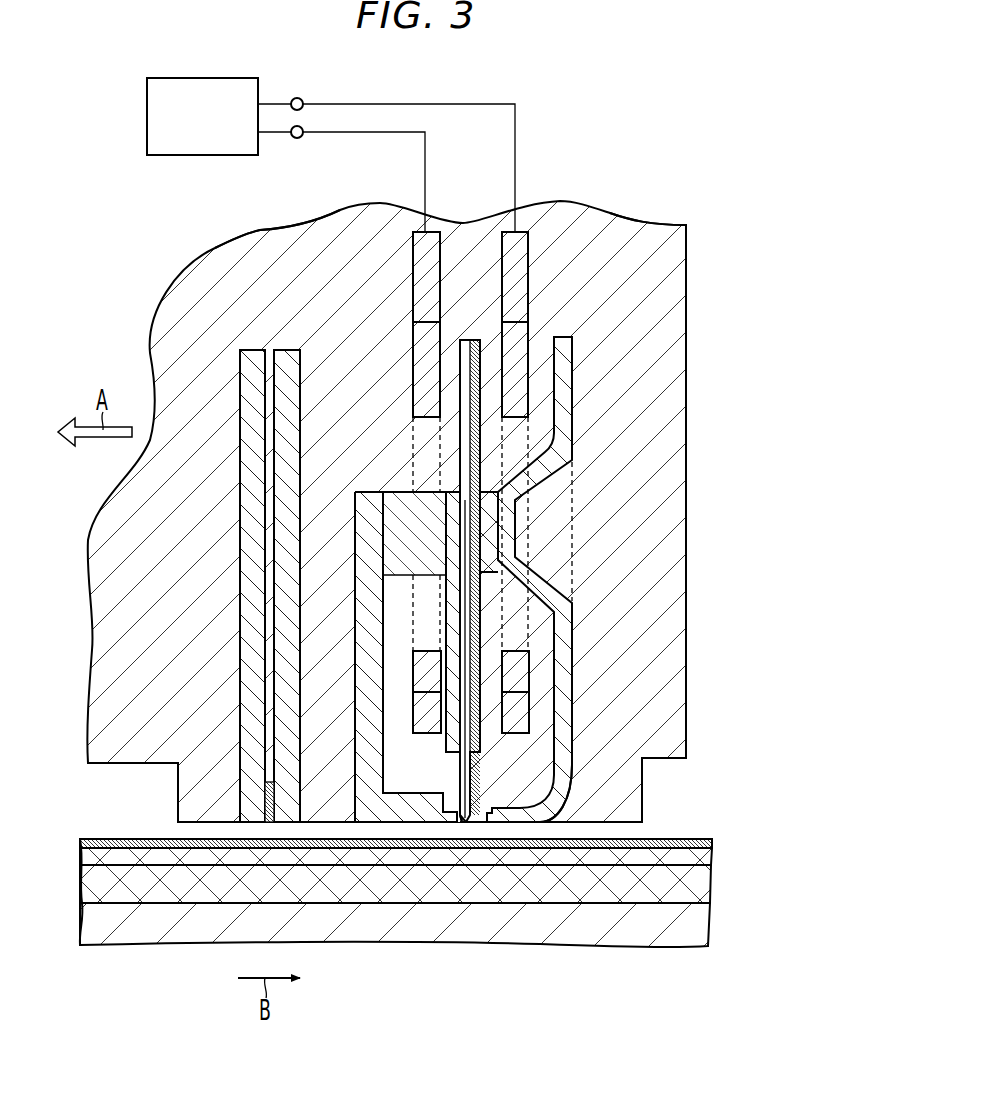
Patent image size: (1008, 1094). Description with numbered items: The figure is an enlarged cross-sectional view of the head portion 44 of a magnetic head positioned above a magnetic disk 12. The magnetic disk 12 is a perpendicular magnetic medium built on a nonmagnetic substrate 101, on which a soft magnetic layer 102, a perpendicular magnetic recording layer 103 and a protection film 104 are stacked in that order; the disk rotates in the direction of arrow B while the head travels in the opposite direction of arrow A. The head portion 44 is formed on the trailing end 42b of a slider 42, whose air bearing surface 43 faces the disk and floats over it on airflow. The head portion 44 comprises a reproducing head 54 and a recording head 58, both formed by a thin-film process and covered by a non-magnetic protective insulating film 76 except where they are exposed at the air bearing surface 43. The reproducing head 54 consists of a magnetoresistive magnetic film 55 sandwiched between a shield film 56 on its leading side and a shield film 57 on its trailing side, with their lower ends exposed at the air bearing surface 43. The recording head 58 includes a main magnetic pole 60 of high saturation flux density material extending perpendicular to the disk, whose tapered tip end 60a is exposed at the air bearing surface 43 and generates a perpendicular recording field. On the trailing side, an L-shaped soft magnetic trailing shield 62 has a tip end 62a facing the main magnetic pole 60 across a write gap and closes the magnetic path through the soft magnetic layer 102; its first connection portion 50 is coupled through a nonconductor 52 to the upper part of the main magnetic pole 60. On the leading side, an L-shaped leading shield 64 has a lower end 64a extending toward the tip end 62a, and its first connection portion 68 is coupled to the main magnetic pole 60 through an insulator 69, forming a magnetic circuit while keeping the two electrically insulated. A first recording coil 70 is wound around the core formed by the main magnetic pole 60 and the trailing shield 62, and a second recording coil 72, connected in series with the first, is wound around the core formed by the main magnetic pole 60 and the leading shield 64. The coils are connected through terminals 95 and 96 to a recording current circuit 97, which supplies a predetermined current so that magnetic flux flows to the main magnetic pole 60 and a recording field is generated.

The magnetic disk 12 is at (424, 919).
The slider 42 is at (165, 327).
The trailing end 42b is at (686, 433).
The air bearing surface (disk-facing surface) 43 is at (202, 823).
The head portion 44 is at (262, 231).
The first connection portion 50 is at (510, 538).
The nonconductor 52 is at (500, 498).
The reproducing head (read head) 54 is at (251, 558).
The magnetic film 55 is at (266, 800).
The shield film 56 is at (252, 530).
The shield film 57 is at (275, 494).
The recording head (write head) 58 is at (470, 438).
The main magnetic pole 60 is at (481, 428).
The tip end of main magnetic pole 60a is at (465, 824).
The trailing shield (write shield) 62 is at (582, 615).
The tip end of trailing shield 62a is at (537, 823).
The leading shield 64 is at (356, 606).
The lower end of leading shield 64a is at (395, 823).
The first connection portion 68 is at (403, 500).
The nonconductor (insulator) 69 is at (366, 540).
The first recording coil 70 is at (565, 482).
The second recording coil 72 is at (413, 334).
The protective insulating film 76 is at (668, 246).
The terminal 95 is at (297, 98).
The terminal 96 is at (297, 138).
The recording current circuit 97 is at (147, 116).
The substrate 101 is at (706, 926).
The soft magnetic layer 102 is at (710, 884).
The perpendicular magnetic recording layer 103 is at (711, 858).
The protection film 104 is at (712, 841).